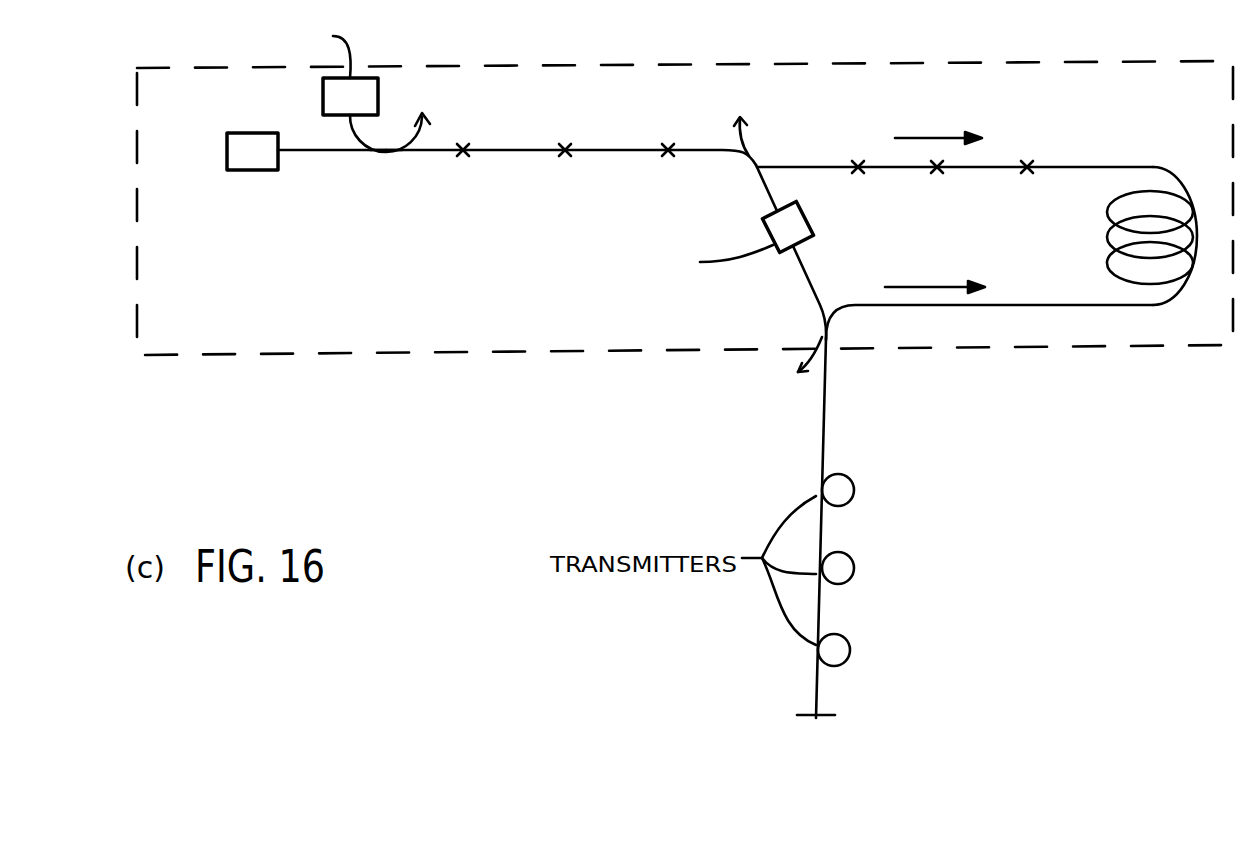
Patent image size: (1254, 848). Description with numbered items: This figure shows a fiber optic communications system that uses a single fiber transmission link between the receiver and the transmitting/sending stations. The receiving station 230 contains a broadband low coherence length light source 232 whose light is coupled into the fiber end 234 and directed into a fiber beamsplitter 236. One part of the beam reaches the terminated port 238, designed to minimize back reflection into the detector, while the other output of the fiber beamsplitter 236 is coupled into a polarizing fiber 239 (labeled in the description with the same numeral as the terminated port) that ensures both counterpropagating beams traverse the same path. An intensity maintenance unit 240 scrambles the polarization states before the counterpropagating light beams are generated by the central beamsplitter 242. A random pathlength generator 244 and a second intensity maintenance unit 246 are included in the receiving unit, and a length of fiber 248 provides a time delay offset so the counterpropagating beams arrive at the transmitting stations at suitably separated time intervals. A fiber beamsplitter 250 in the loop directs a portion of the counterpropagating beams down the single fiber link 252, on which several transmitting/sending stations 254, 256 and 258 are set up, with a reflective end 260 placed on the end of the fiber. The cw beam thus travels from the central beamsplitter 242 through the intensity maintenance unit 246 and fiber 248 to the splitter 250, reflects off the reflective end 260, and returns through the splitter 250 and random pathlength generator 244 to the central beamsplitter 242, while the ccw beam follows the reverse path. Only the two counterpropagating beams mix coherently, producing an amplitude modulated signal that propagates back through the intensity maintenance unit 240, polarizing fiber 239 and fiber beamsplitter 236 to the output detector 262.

The receiving station 230 is at (1108, 62).
The broadband low coherence length light source 232 is at (227, 150).
The fiber end 234 is at (327, 152).
The fiber beamsplitter 236 is at (395, 152).
The terminated port / polarizing fiber 238 is at (428, 110).
The fiber splices 239 is at (520, 152).
The intensity maintenance unit 240 is at (622, 148).
The central beamsplitter 242 is at (757, 152).
The random pathlength generator 244 is at (768, 228).
The intensity maintenance unit 246 is at (904, 170).
The length of fiber 248 is at (1110, 263).
The fiber beamsplitter 250 is at (822, 337).
The single fiber link 252 is at (825, 408).
The transmitting/sending station 254 is at (853, 481).
The transmitting/sending station 256 is at (853, 558).
The transmitting/sending station 258 is at (849, 641).
The reflective end 260 is at (816, 718).
The output detector 262 is at (323, 95).